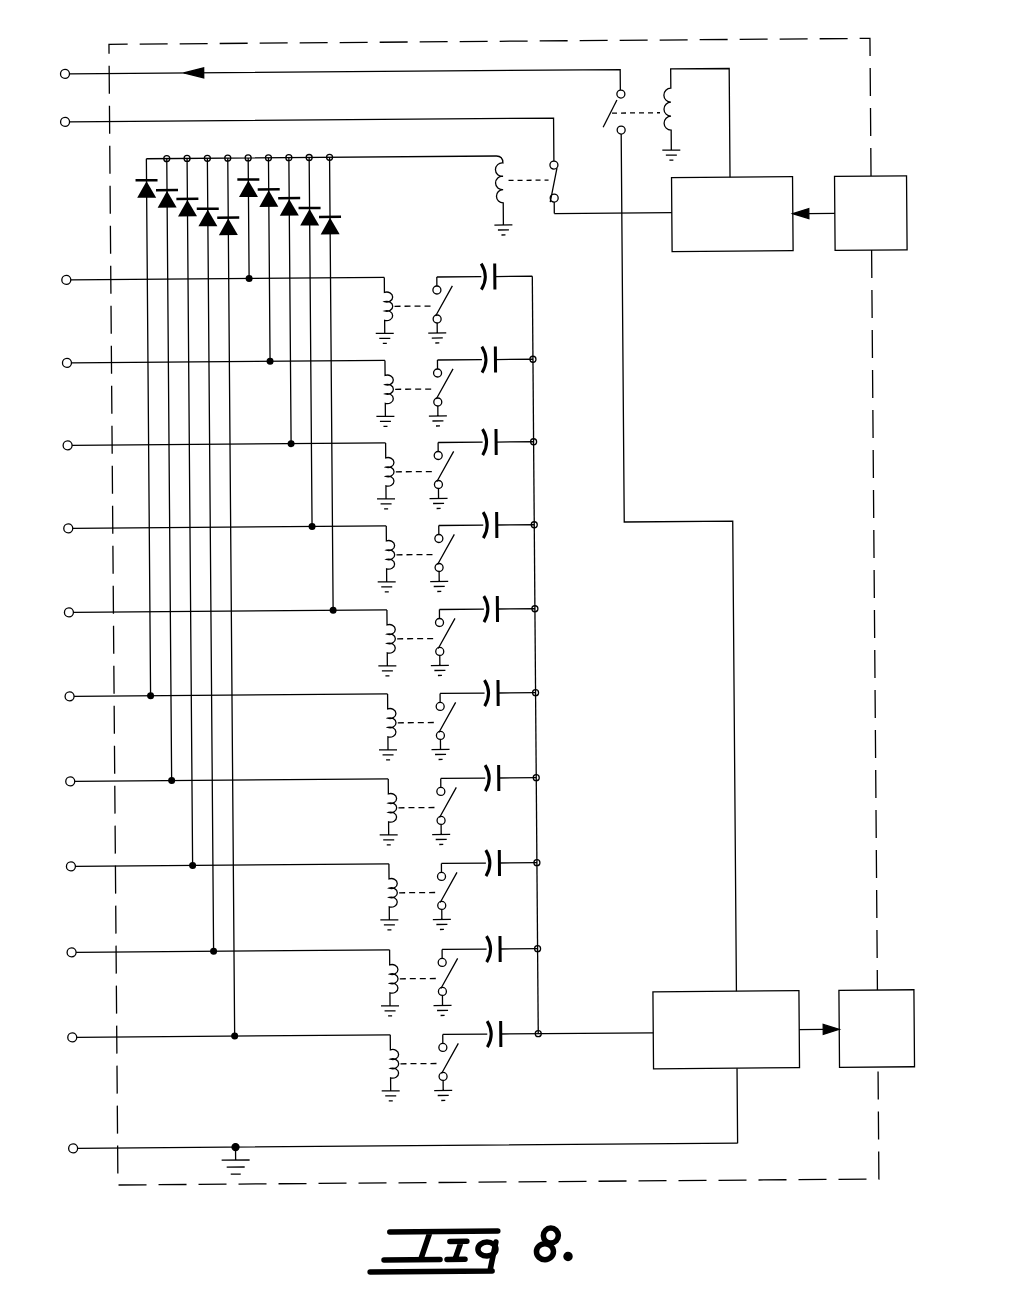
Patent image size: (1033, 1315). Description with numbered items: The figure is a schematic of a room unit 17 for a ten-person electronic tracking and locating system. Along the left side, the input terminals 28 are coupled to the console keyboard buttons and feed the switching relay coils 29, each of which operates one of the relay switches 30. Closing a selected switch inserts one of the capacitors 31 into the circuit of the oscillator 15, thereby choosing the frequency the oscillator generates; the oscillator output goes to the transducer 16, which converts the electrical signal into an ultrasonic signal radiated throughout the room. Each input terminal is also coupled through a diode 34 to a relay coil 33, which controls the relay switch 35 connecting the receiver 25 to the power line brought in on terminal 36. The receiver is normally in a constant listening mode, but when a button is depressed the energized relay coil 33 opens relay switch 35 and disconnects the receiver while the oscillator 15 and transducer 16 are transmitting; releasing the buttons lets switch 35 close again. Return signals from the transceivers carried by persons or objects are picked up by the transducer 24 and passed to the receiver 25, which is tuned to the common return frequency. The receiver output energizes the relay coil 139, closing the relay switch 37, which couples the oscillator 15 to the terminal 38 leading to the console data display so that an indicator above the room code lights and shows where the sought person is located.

The room unit 17 is at (426, 41).
The terminal 38 is at (70, 66).
The terminal 36 is at (64, 118).
The diode 34 is at (140, 187).
The relay coil 33 is at (500, 183).
The relay switch 35 is at (561, 184).
The relay switch 37 is at (612, 118).
The relay coil 139 is at (683, 119).
The receiver 25 is at (770, 179).
The transducer 24 is at (857, 179).
The input terminals 28 is at (70, 280).
The switching relay coils 29 is at (386, 316).
The relay switches 30 is at (456, 287).
The capacitors 31 is at (500, 283).
The oscillator 15 is at (713, 993).
The transducer 16 is at (862, 993).